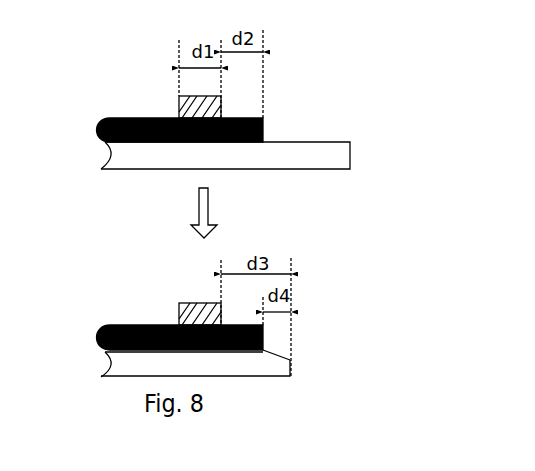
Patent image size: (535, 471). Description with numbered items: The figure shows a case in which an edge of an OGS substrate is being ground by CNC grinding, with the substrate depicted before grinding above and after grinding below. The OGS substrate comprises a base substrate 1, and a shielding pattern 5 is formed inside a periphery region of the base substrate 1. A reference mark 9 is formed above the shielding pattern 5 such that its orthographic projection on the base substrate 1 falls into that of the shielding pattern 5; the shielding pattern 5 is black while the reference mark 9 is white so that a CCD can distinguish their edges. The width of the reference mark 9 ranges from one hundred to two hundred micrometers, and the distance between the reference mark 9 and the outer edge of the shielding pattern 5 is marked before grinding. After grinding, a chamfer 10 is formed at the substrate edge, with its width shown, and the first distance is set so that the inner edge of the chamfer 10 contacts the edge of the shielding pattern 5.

The base substrate 1 is at (110, 155).
The shielding pattern 5 is at (118, 115).
The reference mark 9 is at (177, 102).
The chamfer 10 is at (285, 356).